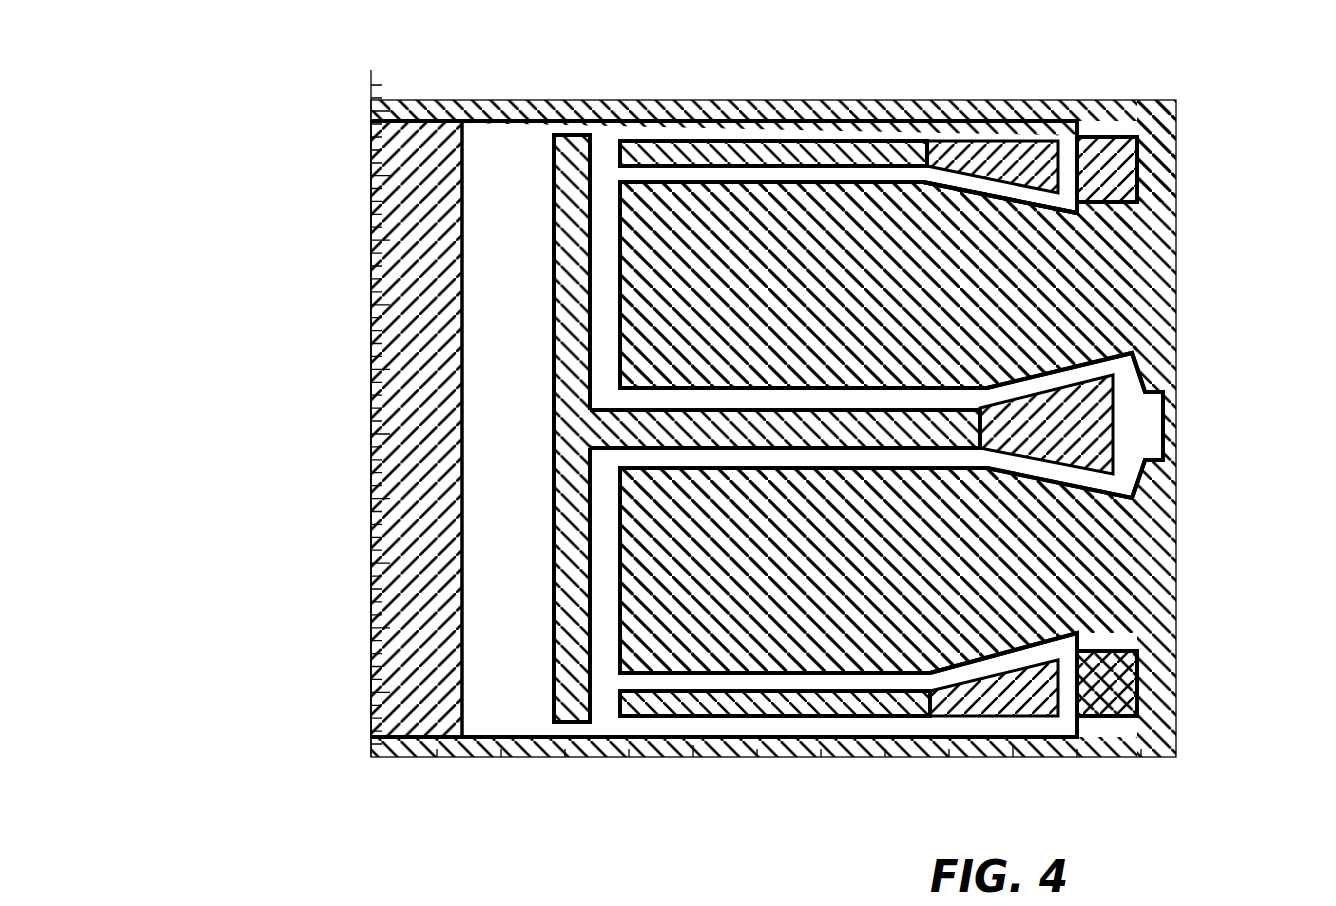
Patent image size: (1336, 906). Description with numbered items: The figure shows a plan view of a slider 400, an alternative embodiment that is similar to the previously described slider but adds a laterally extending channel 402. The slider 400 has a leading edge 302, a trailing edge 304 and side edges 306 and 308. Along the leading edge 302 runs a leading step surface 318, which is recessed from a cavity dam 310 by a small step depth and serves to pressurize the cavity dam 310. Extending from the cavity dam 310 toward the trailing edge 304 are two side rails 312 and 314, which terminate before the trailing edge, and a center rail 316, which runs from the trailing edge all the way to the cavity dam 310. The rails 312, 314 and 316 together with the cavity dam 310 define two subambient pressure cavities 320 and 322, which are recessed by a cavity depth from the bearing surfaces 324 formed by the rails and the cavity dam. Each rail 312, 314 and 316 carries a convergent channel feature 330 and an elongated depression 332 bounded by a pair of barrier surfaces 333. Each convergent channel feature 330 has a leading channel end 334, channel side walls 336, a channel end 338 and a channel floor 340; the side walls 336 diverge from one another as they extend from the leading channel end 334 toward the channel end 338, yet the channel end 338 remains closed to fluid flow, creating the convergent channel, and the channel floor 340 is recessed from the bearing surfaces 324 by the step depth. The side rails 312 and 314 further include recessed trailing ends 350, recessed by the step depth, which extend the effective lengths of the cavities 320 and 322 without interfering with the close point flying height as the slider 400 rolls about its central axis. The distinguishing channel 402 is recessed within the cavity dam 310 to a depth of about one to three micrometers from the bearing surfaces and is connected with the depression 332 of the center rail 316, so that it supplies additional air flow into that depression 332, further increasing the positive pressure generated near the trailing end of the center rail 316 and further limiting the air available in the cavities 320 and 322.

The slider 400 is at (245, 130).
The leading edge 302 is at (373, 657).
The trailing edge 304 is at (1177, 620).
The side edge 306 is at (578, 100).
The side edge 308 is at (490, 760).
The cavity dam 310 is at (525, 180).
The side rail 312 is at (661, 112).
The side rail 314 is at (640, 766).
The center rail 316 is at (656, 375).
The leading step surface 318 is at (400, 290).
The subambient pressure cavity 320 is at (836, 300).
The subambient pressure cavity 322 is at (836, 579).
The bearing surface 324 is at (893, 140).
The convergent channel feature 330 is at (995, 142).
The elongated depression 332 is at (817, 135).
The barrier surface 333 is at (730, 127).
The leading channel end 334 is at (950, 160).
The channel side wall 336 is at (1040, 125).
The channel end 338 is at (1118, 130).
The channel floor 340 is at (950, 178).
The recessed trailing end 350 is at (1123, 157).
The laterally extending channel 402 is at (555, 300).